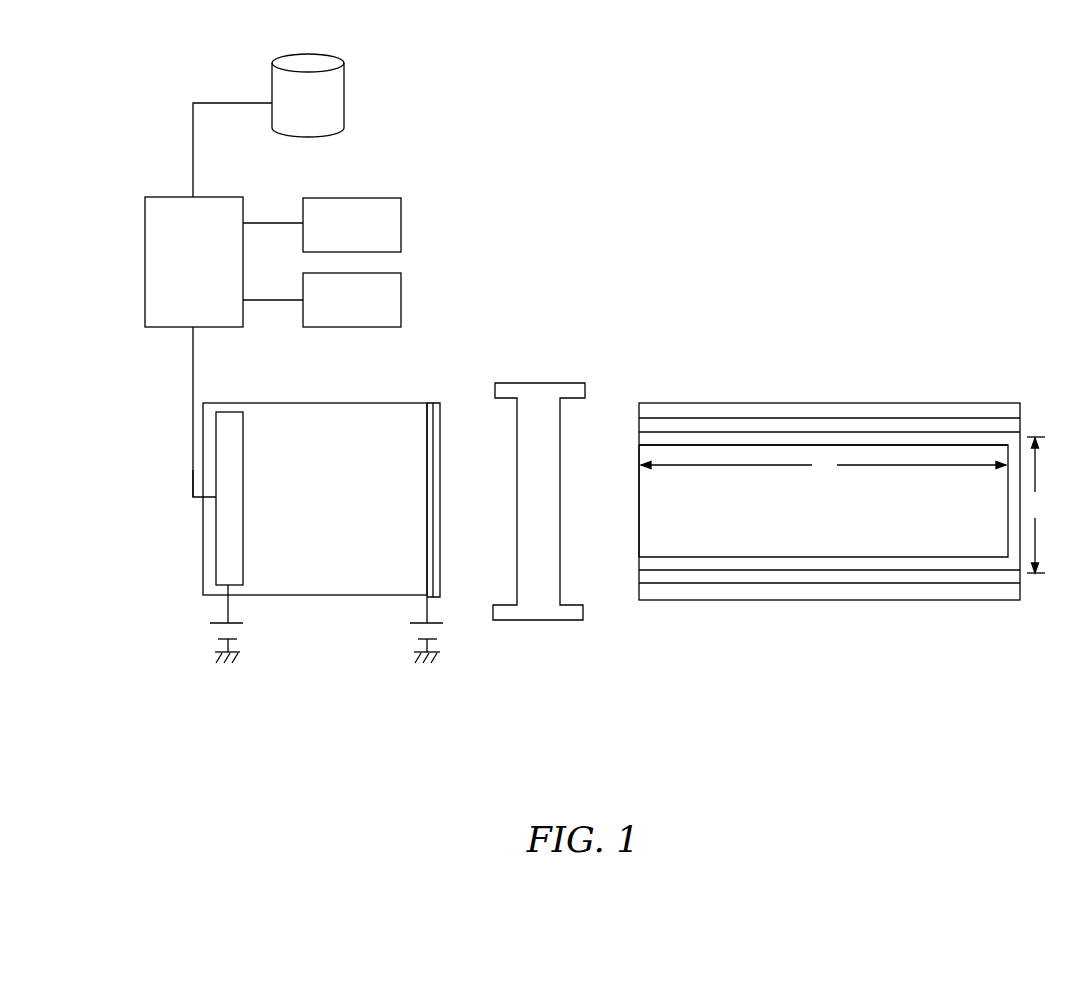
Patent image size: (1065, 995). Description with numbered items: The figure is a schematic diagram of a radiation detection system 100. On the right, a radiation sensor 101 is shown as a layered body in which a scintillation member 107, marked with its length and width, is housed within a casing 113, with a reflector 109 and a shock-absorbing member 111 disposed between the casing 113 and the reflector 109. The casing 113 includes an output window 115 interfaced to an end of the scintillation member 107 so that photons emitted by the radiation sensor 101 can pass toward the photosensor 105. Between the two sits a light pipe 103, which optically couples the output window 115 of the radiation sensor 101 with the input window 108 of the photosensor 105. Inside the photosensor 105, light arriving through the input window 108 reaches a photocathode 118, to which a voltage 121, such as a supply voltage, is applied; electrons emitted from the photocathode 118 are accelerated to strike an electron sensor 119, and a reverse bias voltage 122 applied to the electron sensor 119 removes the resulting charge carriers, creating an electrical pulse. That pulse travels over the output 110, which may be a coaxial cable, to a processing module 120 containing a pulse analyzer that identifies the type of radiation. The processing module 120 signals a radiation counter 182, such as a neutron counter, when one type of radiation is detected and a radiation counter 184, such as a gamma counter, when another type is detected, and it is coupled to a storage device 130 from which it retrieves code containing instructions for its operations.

The radiation detection system 100 is at (838, 88).
The storage device 130 is at (344, 103).
The processing module 120 is at (177, 273).
The radiation counter 182 is at (334, 238).
The radiation counter 184 is at (334, 313).
The photosensor 105 is at (310, 511).
The electron sensor 119 is at (243, 452).
The photocathode 118 is at (427, 482).
The input window 108 is at (440, 517).
The output 110 is at (190, 505).
The voltage 122 is at (219, 680).
The voltage 121 is at (410, 680).
The light pipe 103 is at (530, 622).
The radiation sensor 101 is at (836, 611).
The casing 113 is at (688, 403).
The shock-absorbing member 111 is at (775, 428).
The reflector 109 is at (867, 442).
The scintillation member 107 is at (810, 523).
The output window 115 is at (639, 470).